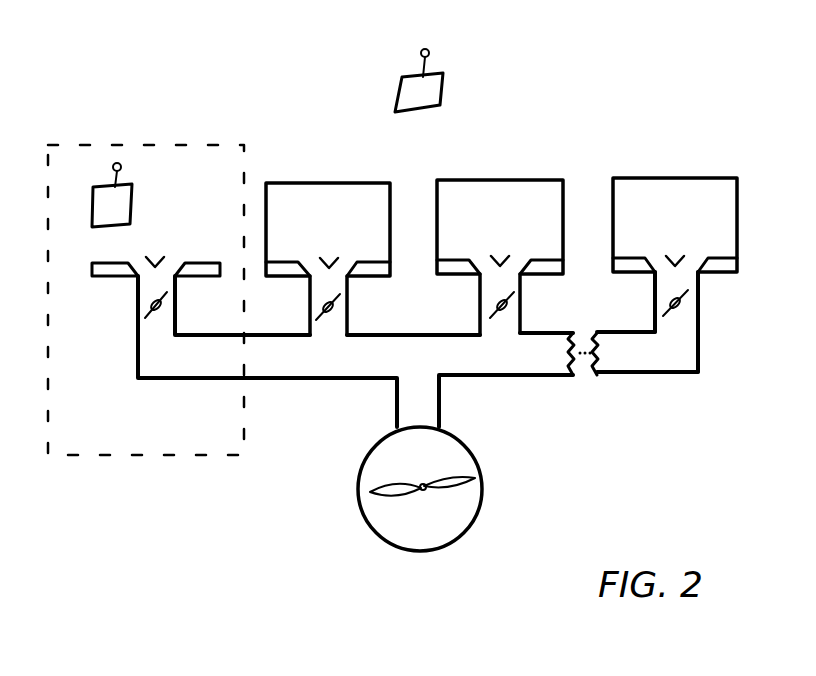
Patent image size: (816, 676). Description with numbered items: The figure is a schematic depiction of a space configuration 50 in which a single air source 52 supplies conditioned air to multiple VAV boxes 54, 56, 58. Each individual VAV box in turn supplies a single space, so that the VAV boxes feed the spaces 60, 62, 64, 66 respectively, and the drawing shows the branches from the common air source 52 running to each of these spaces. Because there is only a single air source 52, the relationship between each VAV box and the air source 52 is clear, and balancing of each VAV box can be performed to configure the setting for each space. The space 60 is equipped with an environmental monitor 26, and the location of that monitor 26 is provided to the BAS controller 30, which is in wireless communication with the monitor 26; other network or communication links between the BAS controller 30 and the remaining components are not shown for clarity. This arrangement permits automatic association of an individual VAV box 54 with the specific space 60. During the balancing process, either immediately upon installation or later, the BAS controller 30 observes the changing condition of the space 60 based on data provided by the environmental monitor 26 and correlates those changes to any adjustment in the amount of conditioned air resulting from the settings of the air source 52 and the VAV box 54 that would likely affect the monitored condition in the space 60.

The space configuration 50 is at (656, 78).
The BAS controller 30 is at (430, 91).
The environmental monitor 26 is at (125, 204).
The air source 52 is at (482, 493).
The VAV box 54 is at (170, 306).
The VAV box 56 is at (350, 308).
The VAV box 58 is at (518, 306).
The space 60 is at (146, 300).
The space 62 is at (328, 259).
The space 64 is at (500, 257).
The space 66 is at (675, 275).